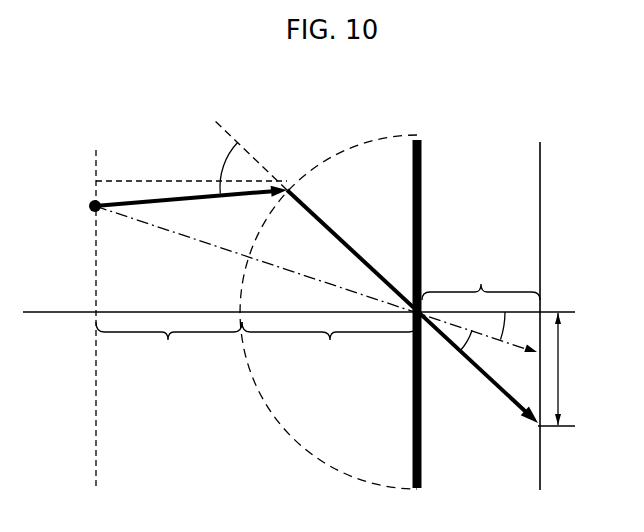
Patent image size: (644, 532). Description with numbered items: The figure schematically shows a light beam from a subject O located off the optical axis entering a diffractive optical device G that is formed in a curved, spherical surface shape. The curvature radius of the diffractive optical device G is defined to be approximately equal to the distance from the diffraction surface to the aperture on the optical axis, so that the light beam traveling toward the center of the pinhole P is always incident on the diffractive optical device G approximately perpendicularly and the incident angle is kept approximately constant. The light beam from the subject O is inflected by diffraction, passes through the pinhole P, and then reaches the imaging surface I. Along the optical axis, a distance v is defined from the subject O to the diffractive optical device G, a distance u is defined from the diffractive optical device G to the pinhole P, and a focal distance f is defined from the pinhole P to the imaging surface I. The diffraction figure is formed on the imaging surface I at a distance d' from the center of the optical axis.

The subject O is at (82, 197).
The diffractive optical device G is at (330, 157).
The pinhole P is at (418, 292).
The imaging surface I is at (539, 292).
The focal distance f is at (481, 284).
The distance from subject to diffractive optical device v is at (169, 346).
The distance from diffractive optical device to pinhole u is at (329, 346).
The distance of diffraction figure from optical axis center d' is at (567, 369).